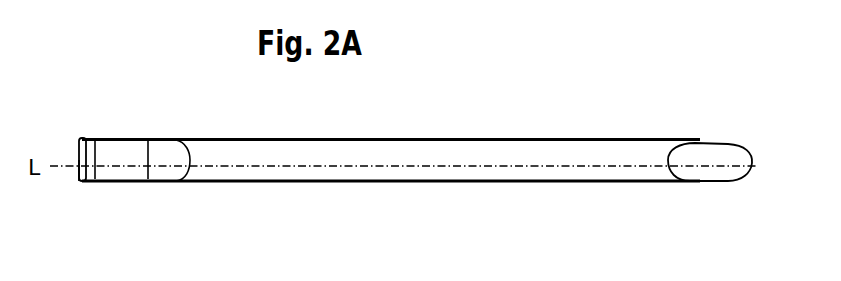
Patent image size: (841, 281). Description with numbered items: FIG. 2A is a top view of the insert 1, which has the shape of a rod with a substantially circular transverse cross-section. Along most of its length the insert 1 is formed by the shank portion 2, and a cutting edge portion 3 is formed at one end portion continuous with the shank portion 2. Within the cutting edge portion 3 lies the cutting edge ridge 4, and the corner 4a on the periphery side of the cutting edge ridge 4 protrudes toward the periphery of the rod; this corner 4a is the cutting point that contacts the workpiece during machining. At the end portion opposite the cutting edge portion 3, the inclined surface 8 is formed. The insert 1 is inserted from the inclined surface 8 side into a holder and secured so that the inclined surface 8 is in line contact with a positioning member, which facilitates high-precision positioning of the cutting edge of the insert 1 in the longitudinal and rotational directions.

The insert 1 is at (573, 109).
The shank portion 2 is at (410, 150).
The cutting edge portion 3 is at (75, 128).
The cutting edge ridge 4 is at (78, 164).
The corner 4a is at (78, 183).
The inclined surface 8 is at (712, 165).